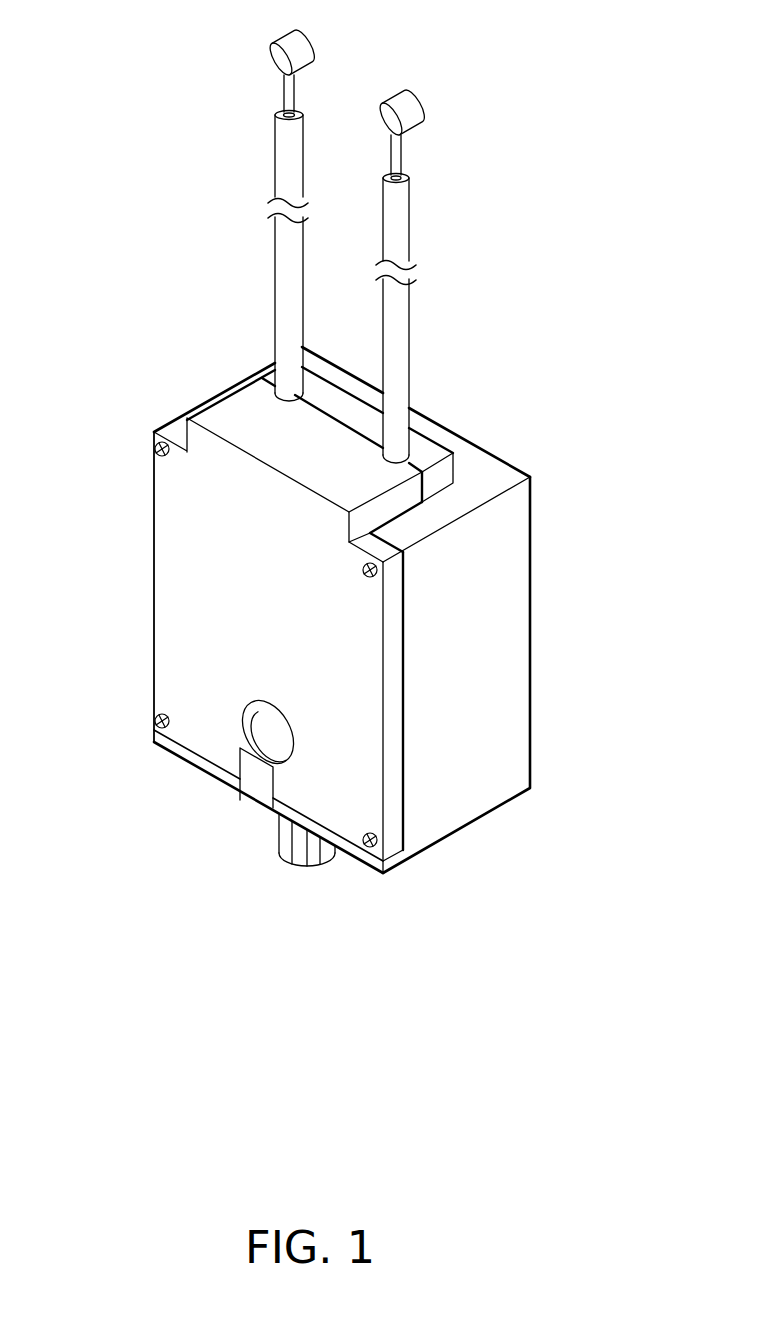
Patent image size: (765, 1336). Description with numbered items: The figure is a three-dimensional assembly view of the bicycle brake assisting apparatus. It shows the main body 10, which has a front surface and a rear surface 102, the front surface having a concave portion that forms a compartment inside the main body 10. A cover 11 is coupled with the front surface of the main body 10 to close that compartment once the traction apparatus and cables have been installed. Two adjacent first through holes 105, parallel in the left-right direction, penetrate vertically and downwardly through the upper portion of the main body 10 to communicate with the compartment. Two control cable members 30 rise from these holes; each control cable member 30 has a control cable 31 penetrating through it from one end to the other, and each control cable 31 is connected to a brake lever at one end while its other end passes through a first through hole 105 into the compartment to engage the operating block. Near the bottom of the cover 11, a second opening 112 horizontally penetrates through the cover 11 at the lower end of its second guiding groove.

The main body 10 is at (540, 697).
The cover 11 is at (155, 600).
The rear surface 102 is at (531, 582).
The first through holes 105 is at (262, 366).
The second opening 112 is at (258, 744).
The control cable members 30 is at (276, 238).
The control cable 31 is at (287, 88).